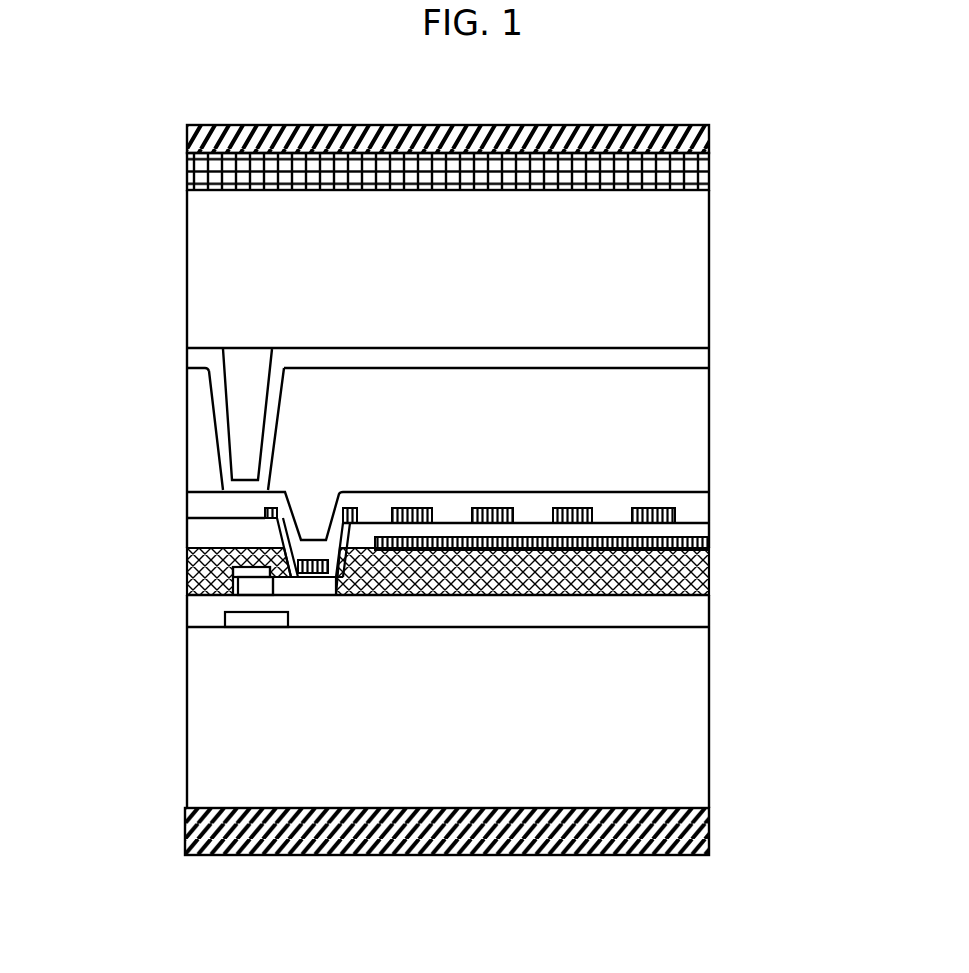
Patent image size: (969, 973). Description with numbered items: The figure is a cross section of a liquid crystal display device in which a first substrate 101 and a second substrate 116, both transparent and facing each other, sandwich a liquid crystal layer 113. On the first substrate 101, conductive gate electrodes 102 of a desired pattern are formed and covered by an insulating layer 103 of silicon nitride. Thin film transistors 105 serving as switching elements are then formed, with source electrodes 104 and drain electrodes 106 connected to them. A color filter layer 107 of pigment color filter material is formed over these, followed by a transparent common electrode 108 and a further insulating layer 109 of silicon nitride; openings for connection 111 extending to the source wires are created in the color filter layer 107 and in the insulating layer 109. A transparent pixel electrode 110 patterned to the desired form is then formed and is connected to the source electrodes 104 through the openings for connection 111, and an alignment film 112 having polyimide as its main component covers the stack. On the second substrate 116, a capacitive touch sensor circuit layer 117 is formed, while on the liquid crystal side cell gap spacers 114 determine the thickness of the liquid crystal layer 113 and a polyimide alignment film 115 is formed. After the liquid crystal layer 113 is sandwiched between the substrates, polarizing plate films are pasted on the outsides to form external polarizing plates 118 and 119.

The first substrate 101 is at (664, 757).
The gate electrodes 102 is at (252, 632).
The insulating layer 103 is at (665, 615).
The source electrodes 104 is at (305, 583).
The thin film transistors 105 is at (245, 594).
The drain electrodes 106 is at (227, 582).
The color filter layer 107 is at (660, 575).
The common electrode 108 is at (452, 540).
The insulating layer 109 is at (220, 531).
The pixel electrode 110 is at (578, 510).
The openings for connection 111 is at (313, 510).
The alignment film 112 is at (222, 503).
The liquid crystal layer 113 is at (665, 438).
The cell gap spacers 114 is at (247, 365).
The alignment film 115 is at (670, 360).
The second substrate 116 is at (667, 259).
The capacitive touch sensor circuit layer 117 is at (709, 173).
The external polarizing plate 118 is at (707, 136).
The external polarizing plate 119 is at (185, 827).